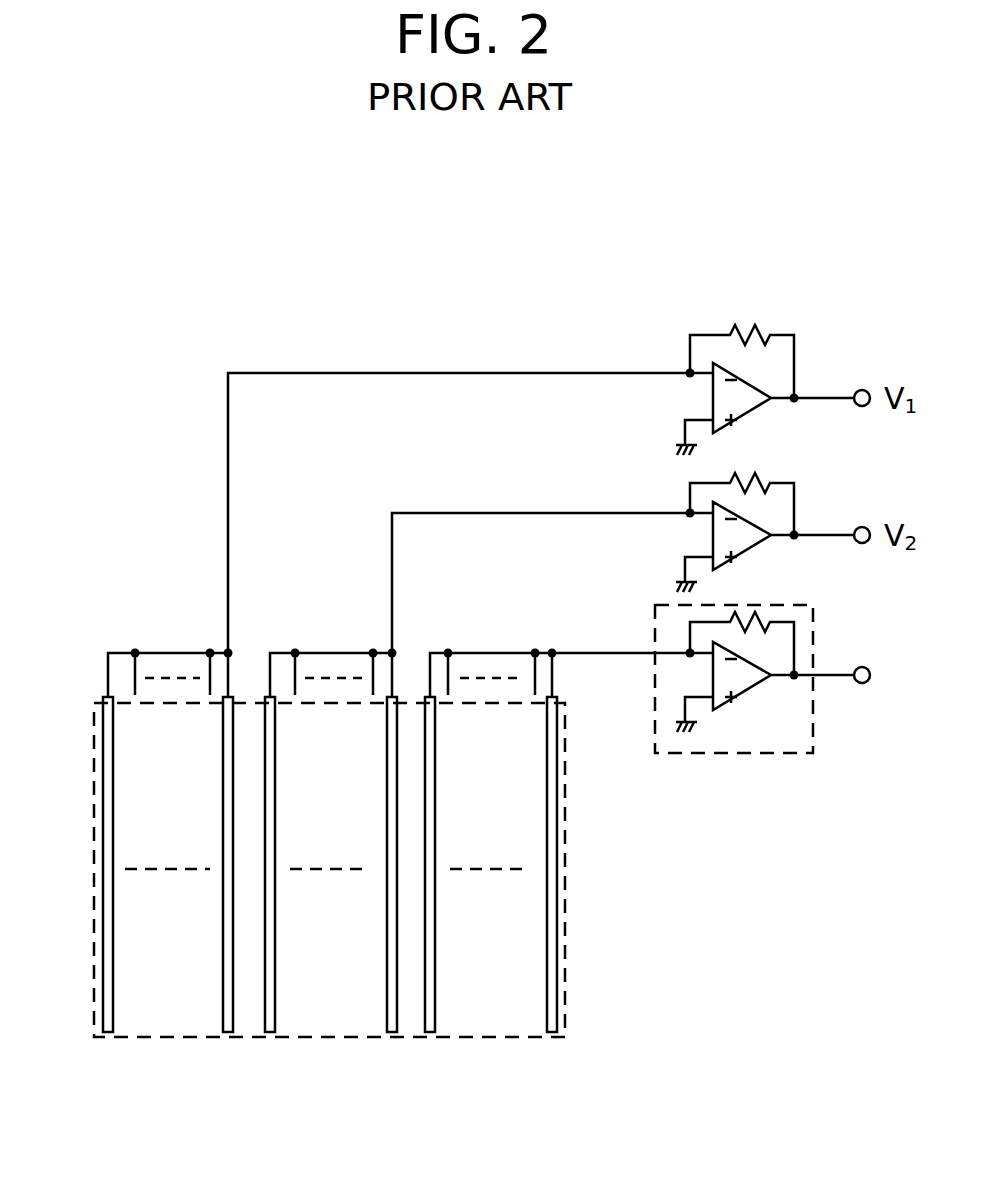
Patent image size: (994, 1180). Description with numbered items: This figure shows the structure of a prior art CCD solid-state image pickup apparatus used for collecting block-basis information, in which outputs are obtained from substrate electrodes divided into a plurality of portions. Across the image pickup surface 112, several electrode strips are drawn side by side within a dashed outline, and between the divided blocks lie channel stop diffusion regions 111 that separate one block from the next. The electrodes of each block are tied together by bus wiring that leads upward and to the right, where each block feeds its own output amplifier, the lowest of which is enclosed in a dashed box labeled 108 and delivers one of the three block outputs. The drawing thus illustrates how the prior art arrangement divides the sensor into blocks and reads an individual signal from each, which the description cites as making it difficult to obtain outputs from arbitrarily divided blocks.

The amplifier circuit 108 is at (752, 753).
The channel stop diffusion region 111 is at (105, 893).
The image pickup surface 112 is at (568, 906).